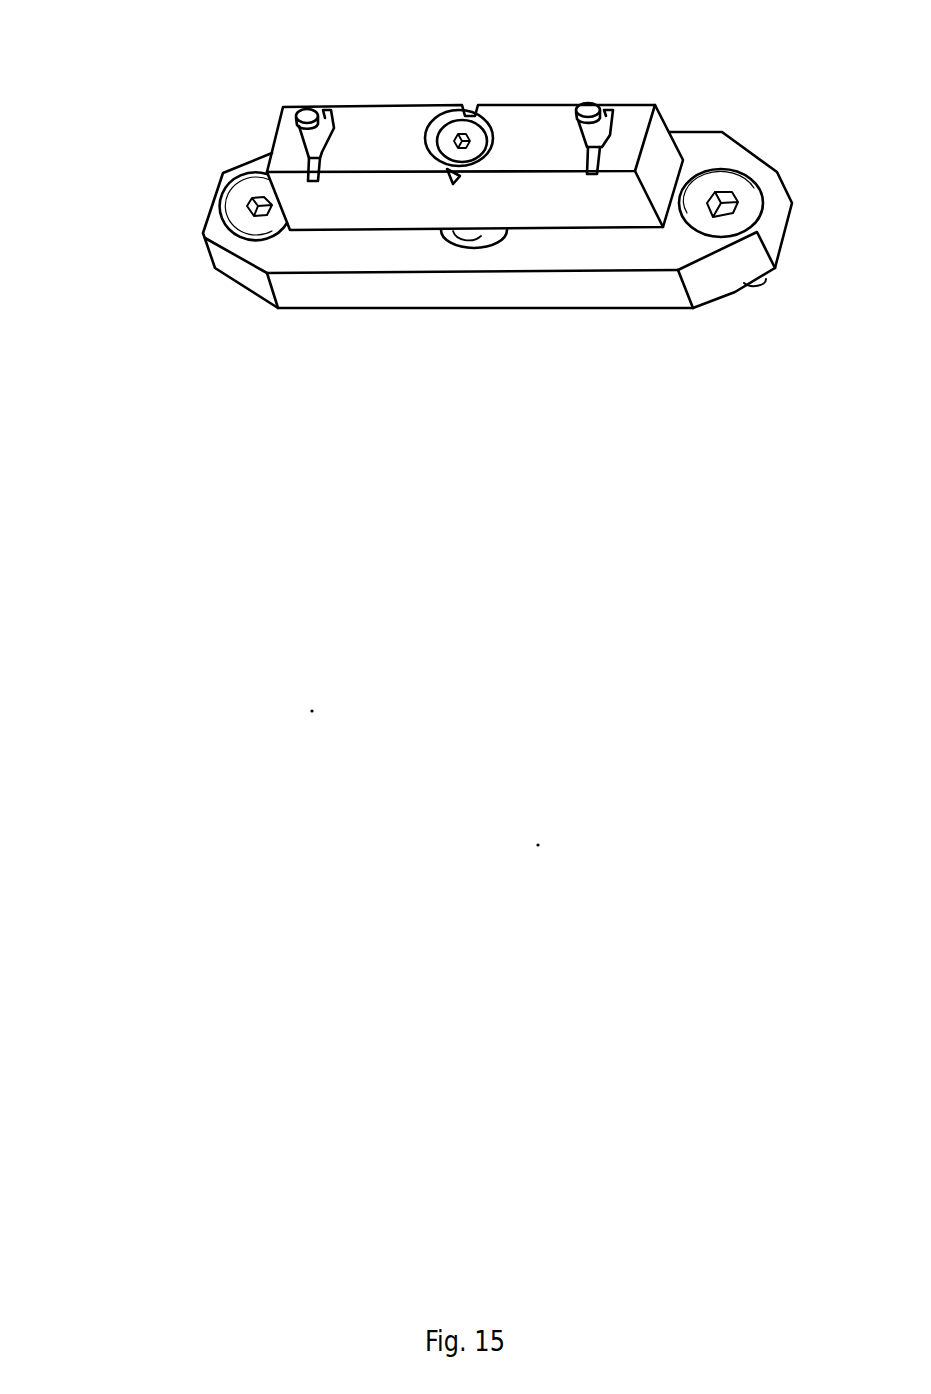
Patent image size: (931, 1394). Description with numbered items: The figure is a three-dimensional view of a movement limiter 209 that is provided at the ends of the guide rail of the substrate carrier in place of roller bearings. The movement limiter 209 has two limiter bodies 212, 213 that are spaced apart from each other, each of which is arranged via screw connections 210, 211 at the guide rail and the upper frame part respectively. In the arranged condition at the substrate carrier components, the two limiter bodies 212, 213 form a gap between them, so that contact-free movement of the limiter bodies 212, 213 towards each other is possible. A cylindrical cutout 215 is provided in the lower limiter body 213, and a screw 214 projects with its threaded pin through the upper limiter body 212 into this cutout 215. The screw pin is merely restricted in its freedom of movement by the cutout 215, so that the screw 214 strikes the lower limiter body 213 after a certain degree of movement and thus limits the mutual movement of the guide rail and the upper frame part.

The movement limiter 209 is at (187, 277).
The screw connection 210 is at (247, 228).
The screw connection 211 is at (313, 107).
The limiter body 212 is at (408, 128).
The limiter body 213 is at (390, 292).
The screw 214 is at (455, 160).
The cylindrical cutout 215 is at (493, 247).